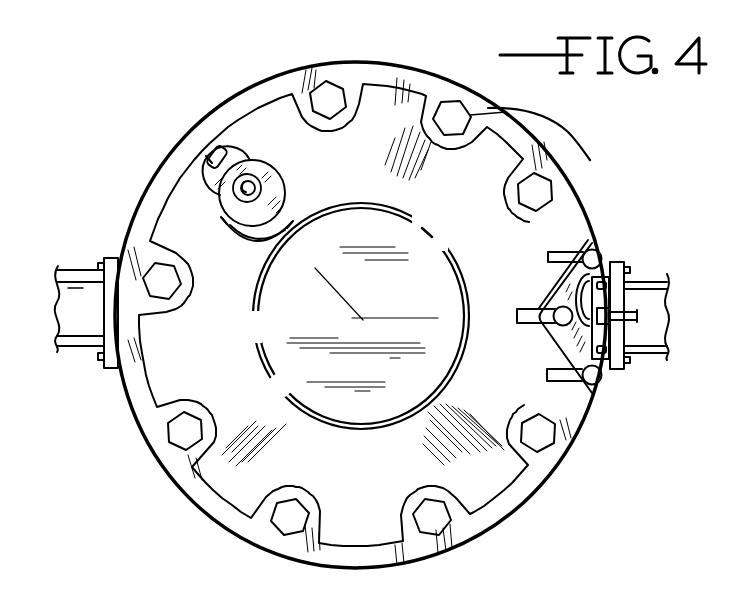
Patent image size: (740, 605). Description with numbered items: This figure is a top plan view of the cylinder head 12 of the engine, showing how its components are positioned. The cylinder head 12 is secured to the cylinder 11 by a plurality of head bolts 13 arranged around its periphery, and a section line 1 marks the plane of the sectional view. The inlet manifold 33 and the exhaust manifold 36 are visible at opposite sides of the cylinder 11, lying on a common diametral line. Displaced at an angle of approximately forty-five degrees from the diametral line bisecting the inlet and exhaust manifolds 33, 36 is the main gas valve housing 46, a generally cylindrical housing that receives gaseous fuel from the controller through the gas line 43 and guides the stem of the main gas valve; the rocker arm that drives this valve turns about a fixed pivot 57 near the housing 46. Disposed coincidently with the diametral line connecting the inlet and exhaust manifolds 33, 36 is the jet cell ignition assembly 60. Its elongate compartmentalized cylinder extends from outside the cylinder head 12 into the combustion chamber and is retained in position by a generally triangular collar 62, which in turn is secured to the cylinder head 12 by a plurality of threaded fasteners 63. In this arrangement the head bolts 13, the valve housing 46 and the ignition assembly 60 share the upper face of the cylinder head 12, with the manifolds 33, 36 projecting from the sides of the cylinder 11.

The section line 1 is at (180, 120).
The cylinder 11 is at (533, 497).
The cylinder head 12 is at (212, 494).
The head bolts 13 is at (543, 188).
The inlet manifold 33 is at (650, 356).
The exhaust manifold 36 is at (76, 347).
The gas line 43 is at (234, 136).
The main gas valve housing 46 is at (294, 212).
The fixed pivot 57 is at (229, 208).
The jet cell ignition assembly 60 is at (616, 258).
The triangular collar 62 is at (552, 347).
The threaded fasteners 63 is at (556, 300).